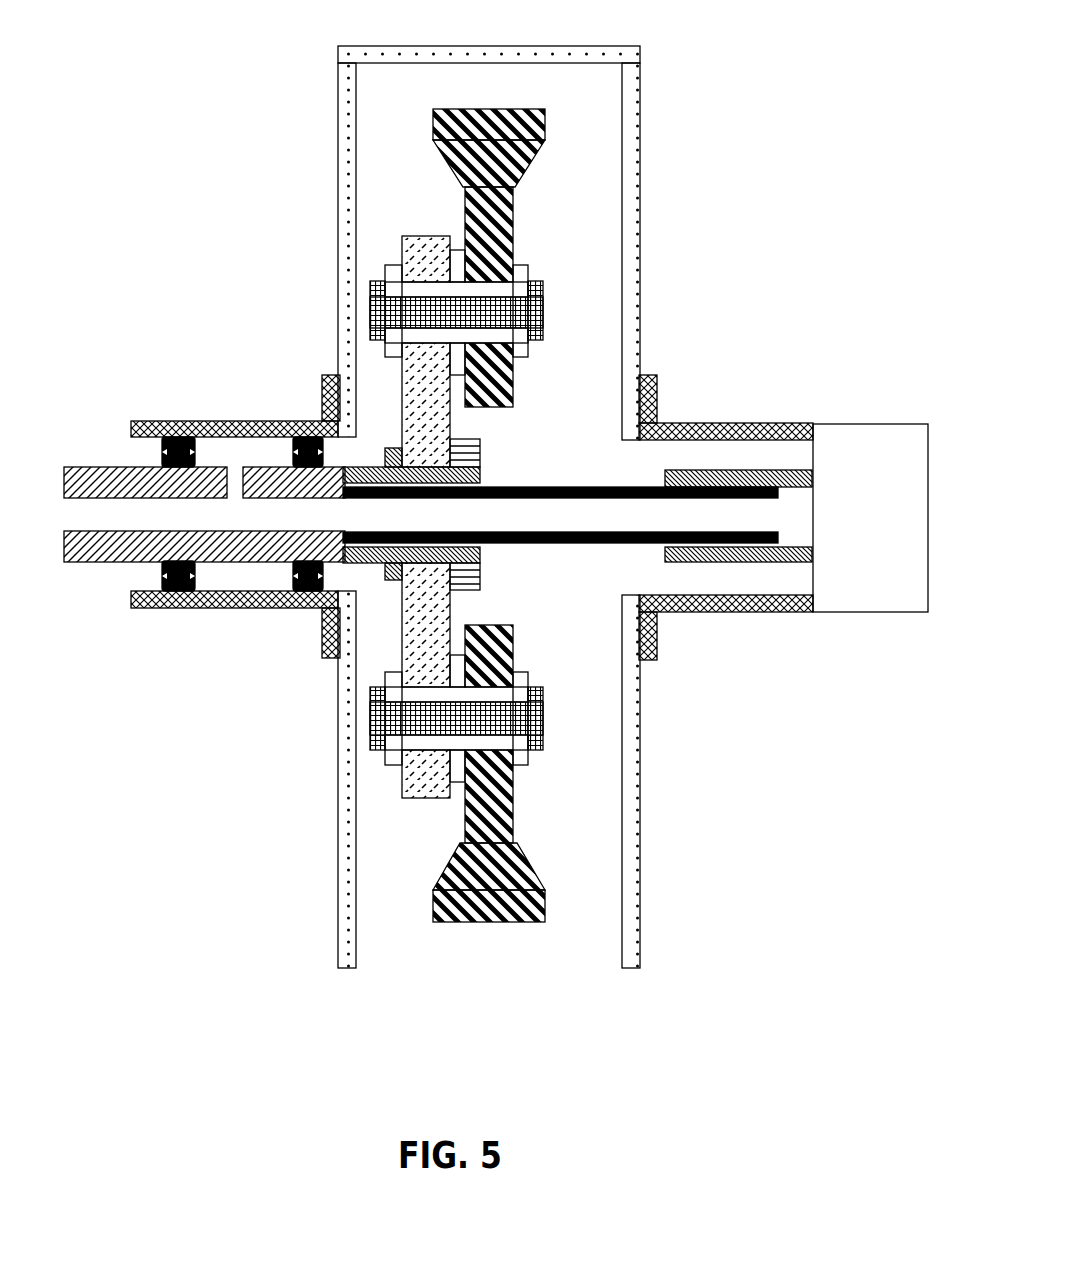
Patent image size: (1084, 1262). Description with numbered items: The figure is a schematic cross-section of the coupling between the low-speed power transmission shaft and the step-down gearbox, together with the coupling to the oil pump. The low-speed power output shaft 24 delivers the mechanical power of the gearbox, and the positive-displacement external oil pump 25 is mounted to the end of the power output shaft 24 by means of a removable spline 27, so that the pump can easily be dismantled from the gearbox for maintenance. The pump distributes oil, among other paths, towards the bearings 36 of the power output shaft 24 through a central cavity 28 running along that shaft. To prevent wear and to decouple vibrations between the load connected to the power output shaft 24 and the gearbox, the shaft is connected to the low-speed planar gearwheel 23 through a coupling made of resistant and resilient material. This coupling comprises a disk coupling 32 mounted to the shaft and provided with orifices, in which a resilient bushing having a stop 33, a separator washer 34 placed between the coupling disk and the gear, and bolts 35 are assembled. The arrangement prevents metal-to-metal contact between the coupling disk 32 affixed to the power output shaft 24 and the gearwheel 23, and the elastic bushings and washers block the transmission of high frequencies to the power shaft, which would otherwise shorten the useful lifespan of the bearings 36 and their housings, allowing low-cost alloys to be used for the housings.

The low-speed gearwheel 23 is at (495, 811).
The power output shaft 24 is at (132, 547).
The external oil pump 25 is at (877, 467).
The removable spline 27 is at (640, 542).
The central cavity 28 is at (113, 513).
The disk coupling 32 is at (432, 403).
The resilient bushing having a stop 33 is at (472, 337).
The separator washer 34 is at (393, 280).
The bolts 35 is at (520, 310).
The bearings 36 is at (298, 578).